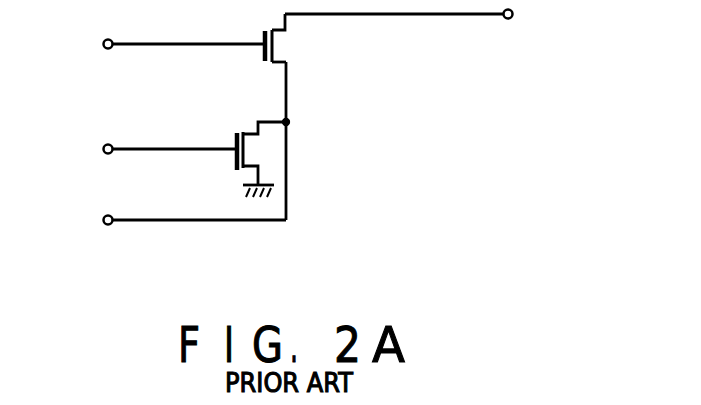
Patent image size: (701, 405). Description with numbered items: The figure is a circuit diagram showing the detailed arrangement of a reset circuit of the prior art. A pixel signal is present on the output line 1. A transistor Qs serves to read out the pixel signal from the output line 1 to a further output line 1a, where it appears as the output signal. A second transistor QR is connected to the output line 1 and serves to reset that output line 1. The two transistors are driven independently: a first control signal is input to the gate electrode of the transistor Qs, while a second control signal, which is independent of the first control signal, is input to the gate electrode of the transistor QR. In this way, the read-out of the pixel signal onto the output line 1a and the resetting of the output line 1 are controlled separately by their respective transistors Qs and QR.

The output line 1 is at (227, 222).
The output line 1a is at (452, 15).
The transistor Qs is at (295, 40).
The transistor QR is at (245, 148).